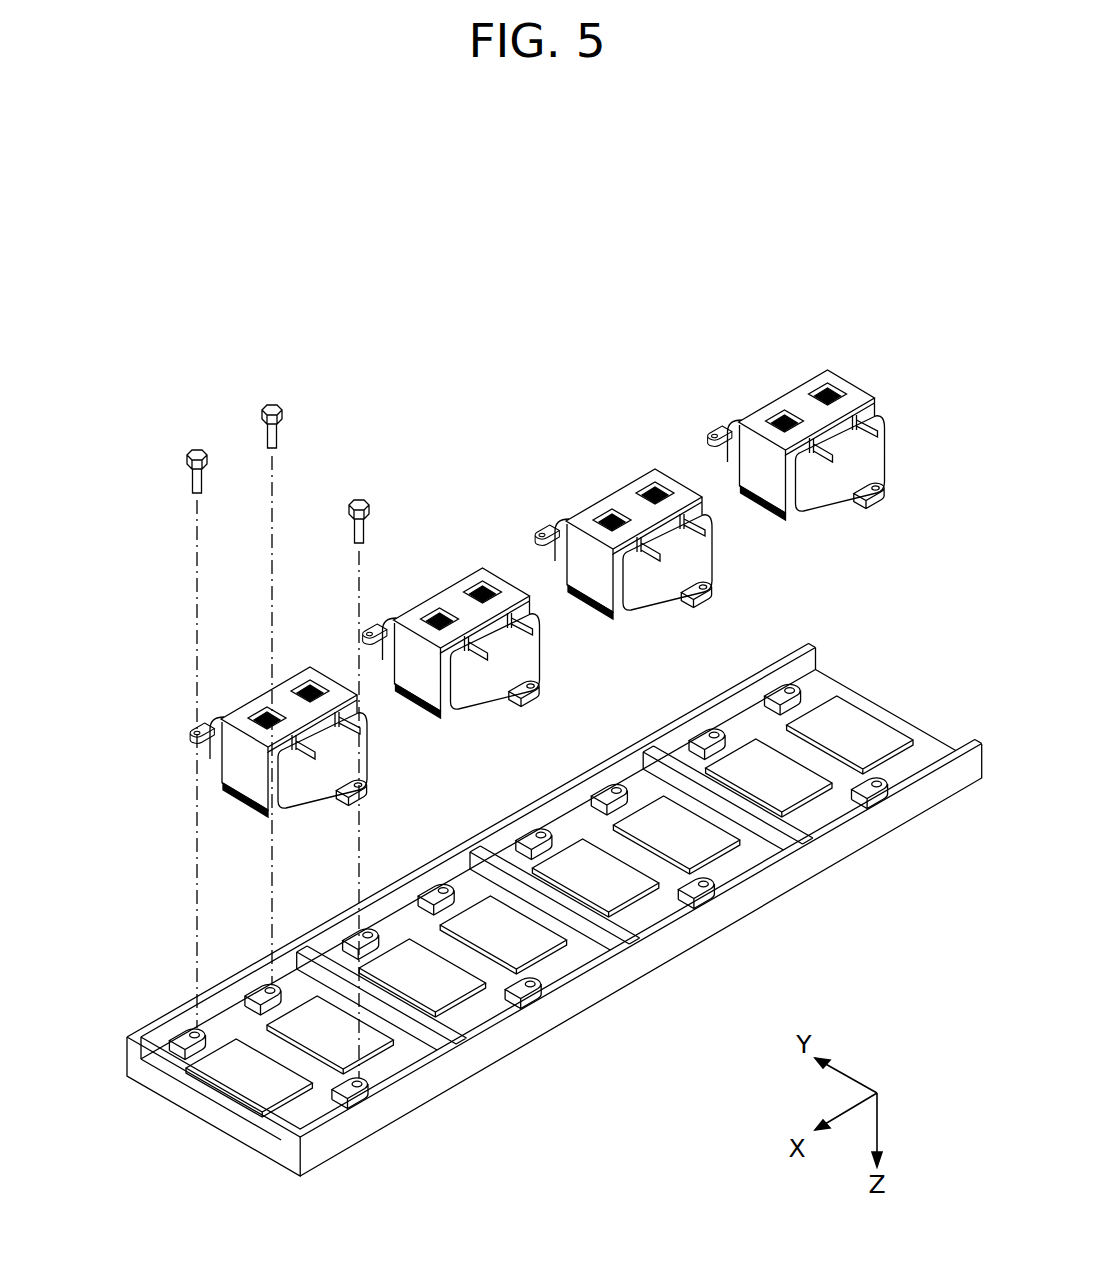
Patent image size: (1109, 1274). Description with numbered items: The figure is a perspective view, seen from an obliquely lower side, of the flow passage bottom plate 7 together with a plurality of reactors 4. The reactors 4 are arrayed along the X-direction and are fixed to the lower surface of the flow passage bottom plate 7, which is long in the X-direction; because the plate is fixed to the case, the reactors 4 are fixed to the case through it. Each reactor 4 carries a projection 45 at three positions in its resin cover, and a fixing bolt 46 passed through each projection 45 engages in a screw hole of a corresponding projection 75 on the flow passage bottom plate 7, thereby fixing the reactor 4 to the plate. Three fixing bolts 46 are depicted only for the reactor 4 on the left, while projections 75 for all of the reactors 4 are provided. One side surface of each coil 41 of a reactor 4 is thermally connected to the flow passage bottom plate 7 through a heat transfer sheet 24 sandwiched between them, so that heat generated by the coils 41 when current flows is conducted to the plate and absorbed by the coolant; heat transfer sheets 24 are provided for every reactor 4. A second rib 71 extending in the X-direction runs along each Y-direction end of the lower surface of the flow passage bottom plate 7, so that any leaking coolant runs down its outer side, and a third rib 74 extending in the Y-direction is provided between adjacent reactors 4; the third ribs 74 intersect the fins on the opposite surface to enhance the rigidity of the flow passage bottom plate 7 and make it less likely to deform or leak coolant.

The reactor 4 is at (547, 558).
The coil 41 is at (500, 681).
The projection 45 is at (537, 615).
The fixing bolt 46 is at (197, 453).
The flow passage bottom plate 7 is at (238, 1117).
The second rib 71 is at (130, 1050).
The third rib 74 is at (385, 1012).
The projection 75 is at (188, 1025).
The heat transfer sheet 24 is at (780, 773).